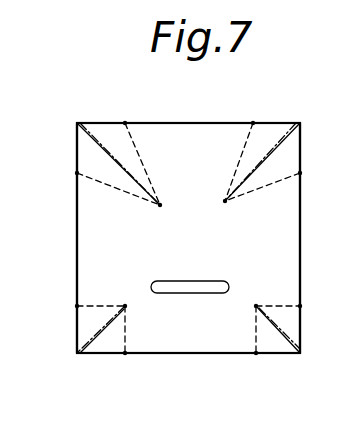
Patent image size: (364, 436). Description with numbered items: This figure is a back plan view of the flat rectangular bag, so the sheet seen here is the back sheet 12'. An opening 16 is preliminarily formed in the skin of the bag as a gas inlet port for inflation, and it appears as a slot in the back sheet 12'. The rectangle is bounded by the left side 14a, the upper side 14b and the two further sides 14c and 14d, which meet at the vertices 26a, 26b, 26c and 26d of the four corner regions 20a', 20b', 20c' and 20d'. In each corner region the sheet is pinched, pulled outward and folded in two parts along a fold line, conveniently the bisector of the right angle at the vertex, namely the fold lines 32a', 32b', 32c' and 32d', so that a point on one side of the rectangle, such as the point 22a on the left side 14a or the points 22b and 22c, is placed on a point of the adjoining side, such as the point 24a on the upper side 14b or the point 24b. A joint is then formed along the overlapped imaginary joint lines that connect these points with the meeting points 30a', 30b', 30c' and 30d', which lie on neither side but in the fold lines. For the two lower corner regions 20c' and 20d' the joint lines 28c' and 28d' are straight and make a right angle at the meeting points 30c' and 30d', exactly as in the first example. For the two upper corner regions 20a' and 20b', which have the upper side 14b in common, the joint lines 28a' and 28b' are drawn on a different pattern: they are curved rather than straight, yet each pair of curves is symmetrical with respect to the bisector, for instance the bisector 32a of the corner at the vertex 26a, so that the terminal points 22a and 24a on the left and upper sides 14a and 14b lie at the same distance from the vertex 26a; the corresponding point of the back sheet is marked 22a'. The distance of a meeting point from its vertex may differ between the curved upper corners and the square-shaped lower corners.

The back sheet 12' is at (188, 238).
The opening 16 is at (206, 281).
The left side 14a is at (363, 242).
The upper side 14b is at (178, 123).
The side of rectangle 14c is at (80, 240).
The side of rectangle 14d is at (193, 353).
The corner region 20a' is at (285, 98).
The corner region 20b' is at (157, 136).
The corner region 20c' is at (116, 352).
The corner region 20d' is at (304, 317).
The terminal point 22a is at (288, 185).
The terminal point 22a' is at (334, 201).
The terminal point 22b is at (77, 173).
The terminal point 22c is at (77, 306).
The terminal point 24a is at (250, 122).
The terminal point 24b is at (125, 123).
The vertex 26a is at (300, 123).
The vertex 26b is at (79, 123).
The vertex 26c is at (77, 353).
The vertex 26d is at (300, 353).
The joint line 28a' is at (238, 185).
The joint line 28b' is at (137, 185).
The joint line 28c' is at (128, 301).
The joint line 28d' is at (243, 303).
The meeting point 30a' is at (225, 221).
The meeting point 30b' is at (188, 193).
The meeting point 30c' is at (128, 279).
The meeting point 30d' is at (227, 323).
The bisector 32a is at (338, 131).
The fold line 32a' is at (291, 162).
The fold line 32b' is at (90, 164).
The fold line 32c' is at (72, 331).
The fold line 32d' is at (275, 352).